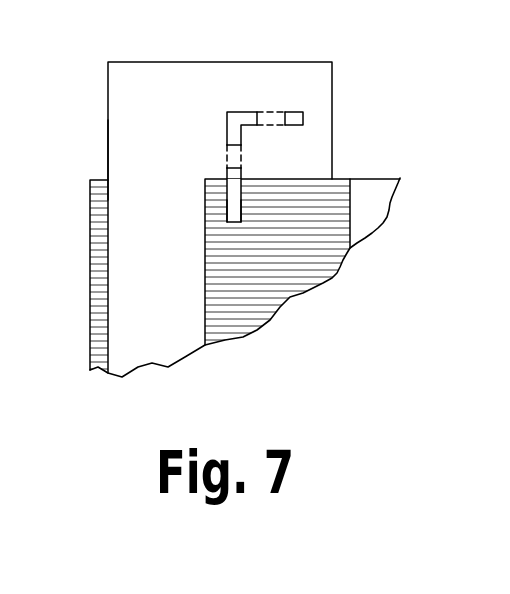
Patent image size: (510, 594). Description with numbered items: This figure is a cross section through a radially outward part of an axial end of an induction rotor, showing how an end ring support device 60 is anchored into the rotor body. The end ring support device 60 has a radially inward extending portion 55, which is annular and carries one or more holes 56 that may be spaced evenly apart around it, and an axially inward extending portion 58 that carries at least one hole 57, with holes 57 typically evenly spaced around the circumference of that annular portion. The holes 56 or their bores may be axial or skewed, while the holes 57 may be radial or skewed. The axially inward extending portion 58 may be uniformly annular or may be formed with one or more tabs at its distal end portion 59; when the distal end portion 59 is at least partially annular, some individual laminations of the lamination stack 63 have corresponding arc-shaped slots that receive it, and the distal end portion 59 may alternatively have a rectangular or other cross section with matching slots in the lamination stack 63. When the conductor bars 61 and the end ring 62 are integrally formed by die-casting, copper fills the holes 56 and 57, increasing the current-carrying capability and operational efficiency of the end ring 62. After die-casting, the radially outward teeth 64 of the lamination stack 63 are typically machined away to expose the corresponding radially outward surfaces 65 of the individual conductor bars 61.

The radially inward extending portion 55 is at (298, 117).
The holes 56 is at (271, 112).
The hole 57 is at (227, 157).
The axially inward extending portion 58 is at (227, 173).
The distal end portion 59 is at (233, 210).
The end ring support device 60 is at (232, 120).
The conductor bars 61 is at (163, 333).
The end ring 62 is at (148, 78).
The lamination stack 63 is at (317, 245).
The radially outward teeth 64 is at (97, 235).
The radially outward surfaces 65 is at (108, 157).